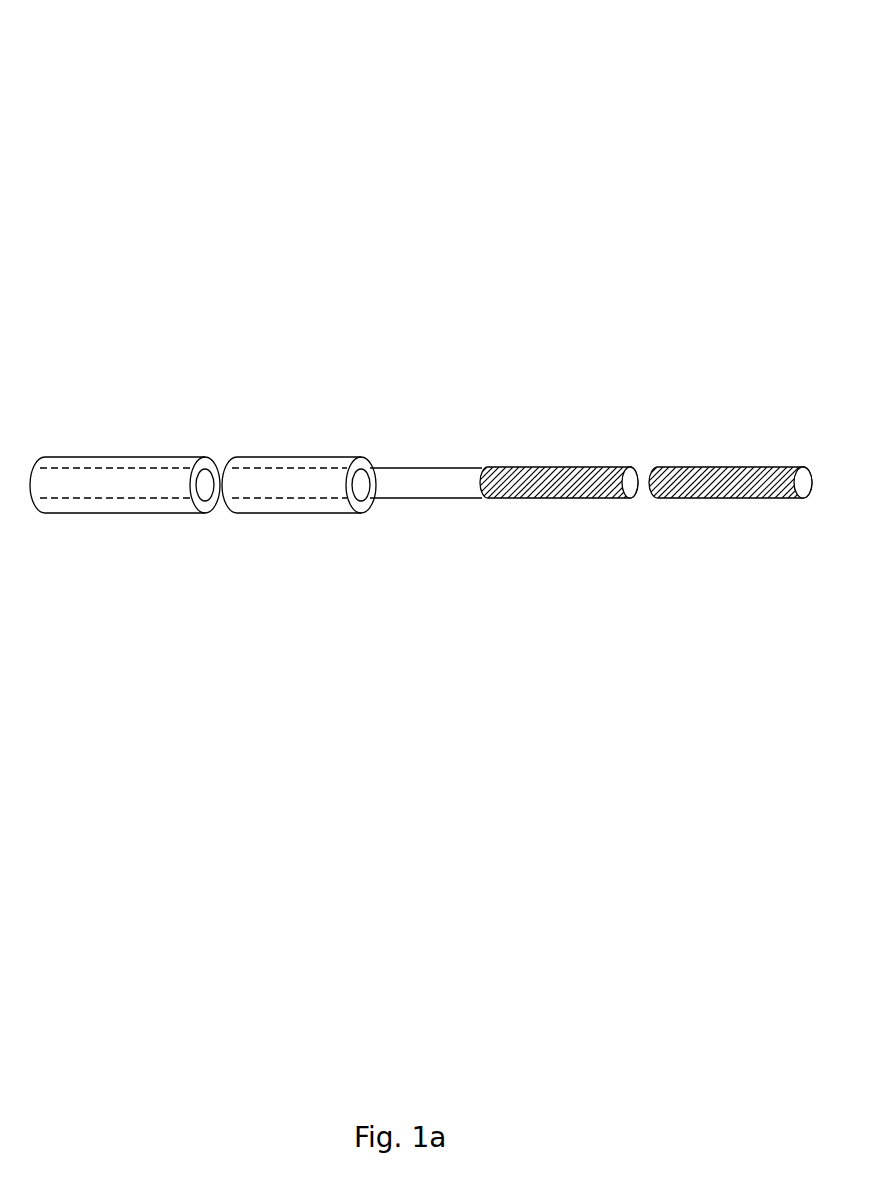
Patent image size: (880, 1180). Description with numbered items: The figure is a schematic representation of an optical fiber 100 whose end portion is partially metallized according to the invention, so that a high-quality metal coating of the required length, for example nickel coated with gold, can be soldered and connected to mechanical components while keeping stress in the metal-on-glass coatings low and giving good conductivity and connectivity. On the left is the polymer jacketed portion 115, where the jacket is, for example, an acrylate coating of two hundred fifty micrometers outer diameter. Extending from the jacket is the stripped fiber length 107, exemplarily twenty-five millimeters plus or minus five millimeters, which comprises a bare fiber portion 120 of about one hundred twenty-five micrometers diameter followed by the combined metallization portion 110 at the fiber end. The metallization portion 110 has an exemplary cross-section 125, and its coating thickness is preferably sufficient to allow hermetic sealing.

The optical fiber 100 is at (717, 112).
The stripped fiber length 107 is at (812, 552).
The combined metallization portion 110 is at (810, 452).
The polymer jacketed portion 115 is at (373, 438).
The bare fiber portion 120 is at (480, 525).
The cross-section 125 is at (471, 466).